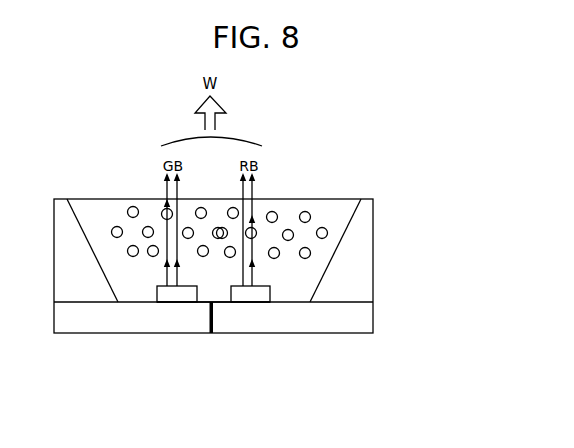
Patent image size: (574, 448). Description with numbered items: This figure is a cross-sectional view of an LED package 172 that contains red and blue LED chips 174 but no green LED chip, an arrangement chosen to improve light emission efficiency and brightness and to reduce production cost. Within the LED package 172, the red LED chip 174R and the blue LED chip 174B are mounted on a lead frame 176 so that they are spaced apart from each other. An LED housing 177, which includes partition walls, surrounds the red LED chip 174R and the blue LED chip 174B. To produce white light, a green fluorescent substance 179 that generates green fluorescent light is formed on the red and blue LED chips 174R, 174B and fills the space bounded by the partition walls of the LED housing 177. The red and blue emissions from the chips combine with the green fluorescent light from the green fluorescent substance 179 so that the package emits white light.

The LED package 172 is at (320, 139).
The LED chips 174 is at (283, 412).
The blue LED chip 174B is at (187, 297).
The red LED chip 174R is at (257, 297).
The lead frame 176 is at (138, 317).
The LED housing 177 is at (348, 279).
The green fluorescent substance 179 is at (328, 233).